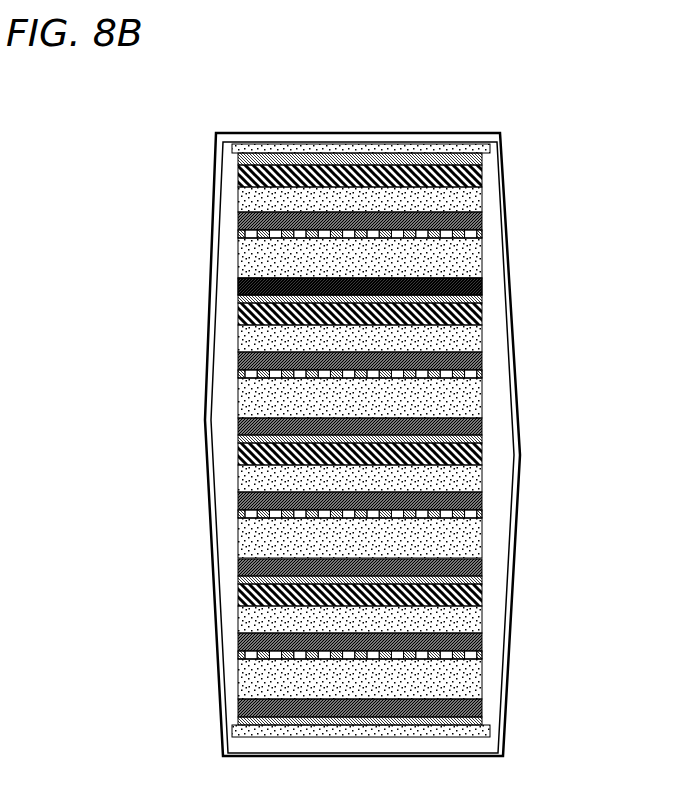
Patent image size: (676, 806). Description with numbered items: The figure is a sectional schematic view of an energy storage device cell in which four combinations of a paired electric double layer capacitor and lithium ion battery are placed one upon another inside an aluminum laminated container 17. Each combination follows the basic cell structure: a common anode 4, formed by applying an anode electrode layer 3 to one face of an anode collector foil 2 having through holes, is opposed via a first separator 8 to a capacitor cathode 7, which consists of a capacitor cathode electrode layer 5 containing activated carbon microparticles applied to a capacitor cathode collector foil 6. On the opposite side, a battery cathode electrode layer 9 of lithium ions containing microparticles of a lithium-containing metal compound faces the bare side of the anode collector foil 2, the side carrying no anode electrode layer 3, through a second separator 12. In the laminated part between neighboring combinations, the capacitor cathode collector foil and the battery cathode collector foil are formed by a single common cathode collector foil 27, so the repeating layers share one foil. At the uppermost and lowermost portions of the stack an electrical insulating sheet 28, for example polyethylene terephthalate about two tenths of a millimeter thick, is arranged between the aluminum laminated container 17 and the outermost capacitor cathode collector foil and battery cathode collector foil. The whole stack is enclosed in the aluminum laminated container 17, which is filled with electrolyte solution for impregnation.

The anode collector foil 2 is at (238, 236).
The anode electrode layer 3 is at (238, 220).
The common anode 4 is at (304, 233).
The capacitor cathode electrode layer 5 is at (238, 178).
The capacitor cathode collector foil 6 is at (238, 160).
The capacitor cathode 7 is at (305, 175).
The first separator 8 is at (475, 198).
The battery cathode electrode layer 9 is at (238, 287).
The second separator 12 is at (478, 258).
The aluminum laminated container 17 is at (436, 132).
The common cathode collector foil 27 is at (475, 301).
The electrical insulating sheet 28 is at (326, 145).